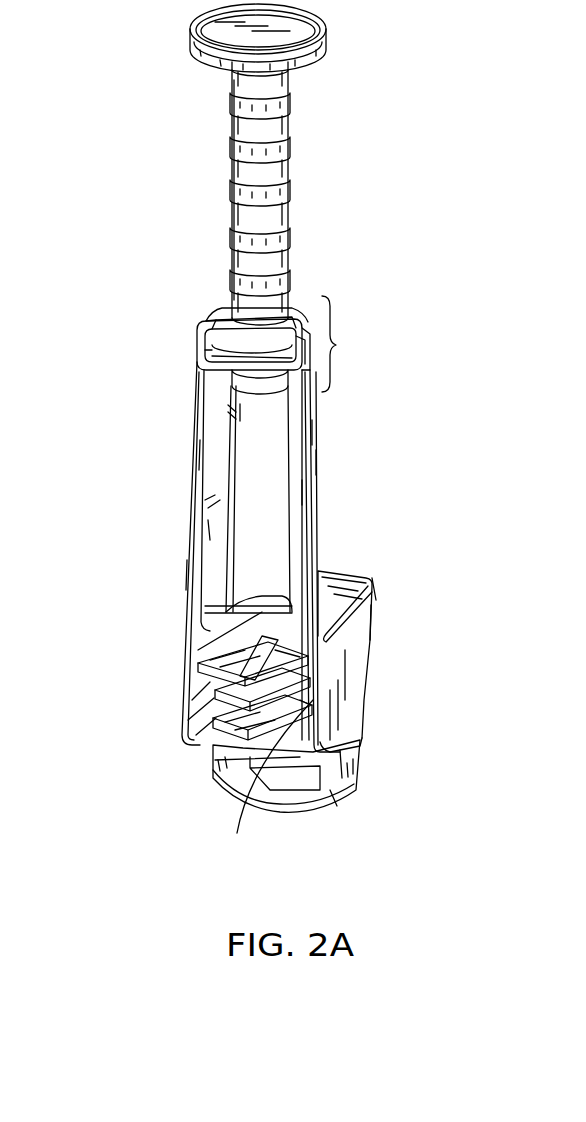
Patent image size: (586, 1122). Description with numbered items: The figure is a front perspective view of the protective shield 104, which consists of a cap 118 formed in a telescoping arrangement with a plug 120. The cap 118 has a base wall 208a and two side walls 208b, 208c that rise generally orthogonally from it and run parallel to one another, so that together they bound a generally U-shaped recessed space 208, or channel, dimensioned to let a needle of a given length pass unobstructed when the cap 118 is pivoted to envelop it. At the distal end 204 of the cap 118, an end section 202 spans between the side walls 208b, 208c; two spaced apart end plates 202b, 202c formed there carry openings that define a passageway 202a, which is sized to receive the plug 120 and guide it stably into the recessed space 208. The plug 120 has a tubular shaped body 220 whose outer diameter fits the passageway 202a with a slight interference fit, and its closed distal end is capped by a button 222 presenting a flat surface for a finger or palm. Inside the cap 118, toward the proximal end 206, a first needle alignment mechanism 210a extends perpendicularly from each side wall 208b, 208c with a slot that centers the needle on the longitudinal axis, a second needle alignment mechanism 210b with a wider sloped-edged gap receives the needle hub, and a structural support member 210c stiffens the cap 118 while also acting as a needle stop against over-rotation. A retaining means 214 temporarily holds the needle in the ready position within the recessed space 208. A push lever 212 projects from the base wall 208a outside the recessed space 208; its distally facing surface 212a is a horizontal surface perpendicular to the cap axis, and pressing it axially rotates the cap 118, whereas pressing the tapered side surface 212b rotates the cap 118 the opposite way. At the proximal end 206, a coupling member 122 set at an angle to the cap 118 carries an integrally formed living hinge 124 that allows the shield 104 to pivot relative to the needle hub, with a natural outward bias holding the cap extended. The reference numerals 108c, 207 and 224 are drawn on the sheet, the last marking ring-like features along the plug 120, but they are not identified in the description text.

The shield 104 is at (423, 178).
The housing wall 108c is at (313, 432).
The cap 118 is at (315, 462).
The plug 120 is at (293, 136).
The coupling member 122 is at (337, 806).
The living hinge 124 is at (357, 772).
The end section 202 is at (300, 378).
The passageway 202a is at (365, 344).
The end plate 202b is at (206, 324).
The end plate 202c is at (202, 358).
The distal end 204 is at (107, 373).
The proximal end 206 is at (211, 787).
The side rail 207 is at (197, 453).
The recessed space 208 is at (250, 492).
The base wall 208a is at (240, 413).
The side wall 208b is at (187, 573).
The side wall 208c is at (316, 660).
The first needle alignment mechanism 210a is at (198, 663).
The second needle alignment mechanism 210b is at (215, 745).
The structural support member 210c is at (298, 492).
The push lever 212 is at (338, 557).
The distally facing surface 212a is at (374, 578).
The tapered side surface 212b is at (368, 617).
The retaining means 214 is at (263, 787).
The tubular shaped body 220 is at (232, 168).
The button 222 is at (325, 36).
The plunger ribs 224 is at (292, 237).